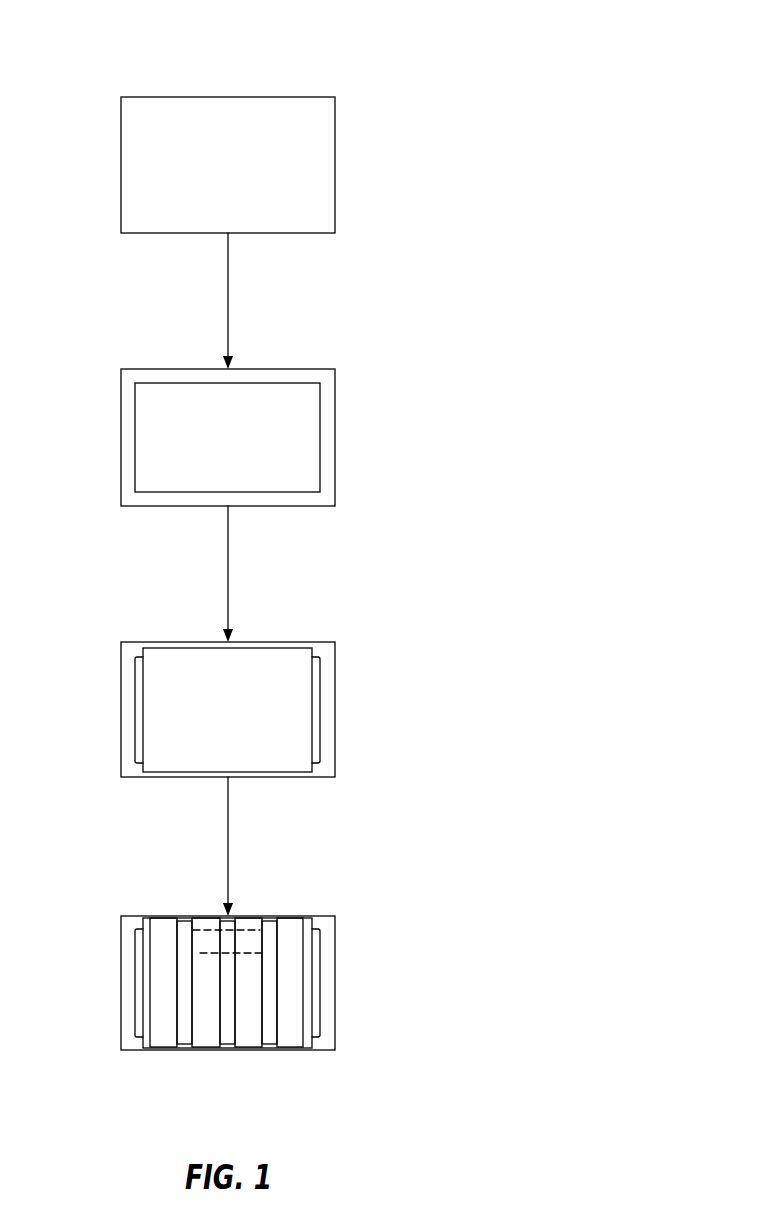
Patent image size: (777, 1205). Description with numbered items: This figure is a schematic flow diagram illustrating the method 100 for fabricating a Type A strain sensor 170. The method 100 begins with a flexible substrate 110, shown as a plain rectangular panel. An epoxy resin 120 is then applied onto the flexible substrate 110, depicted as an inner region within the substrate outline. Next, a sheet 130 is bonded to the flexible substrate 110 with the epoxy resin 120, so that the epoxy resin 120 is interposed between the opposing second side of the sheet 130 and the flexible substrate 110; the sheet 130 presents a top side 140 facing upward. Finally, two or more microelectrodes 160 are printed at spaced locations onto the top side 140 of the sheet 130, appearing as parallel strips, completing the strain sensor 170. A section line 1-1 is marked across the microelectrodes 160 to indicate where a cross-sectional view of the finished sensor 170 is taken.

The method 100 is at (372, 47).
The flexible substrate 110 is at (140, 97).
The epoxy resin 120 is at (320, 418).
The sheet 130 is at (141, 730).
The top side 140 is at (287, 715).
The microelectrodes 160 is at (206, 1051).
The Type A strain sensor 170 is at (393, 873).
The section line 1-1 is at (249, 930).